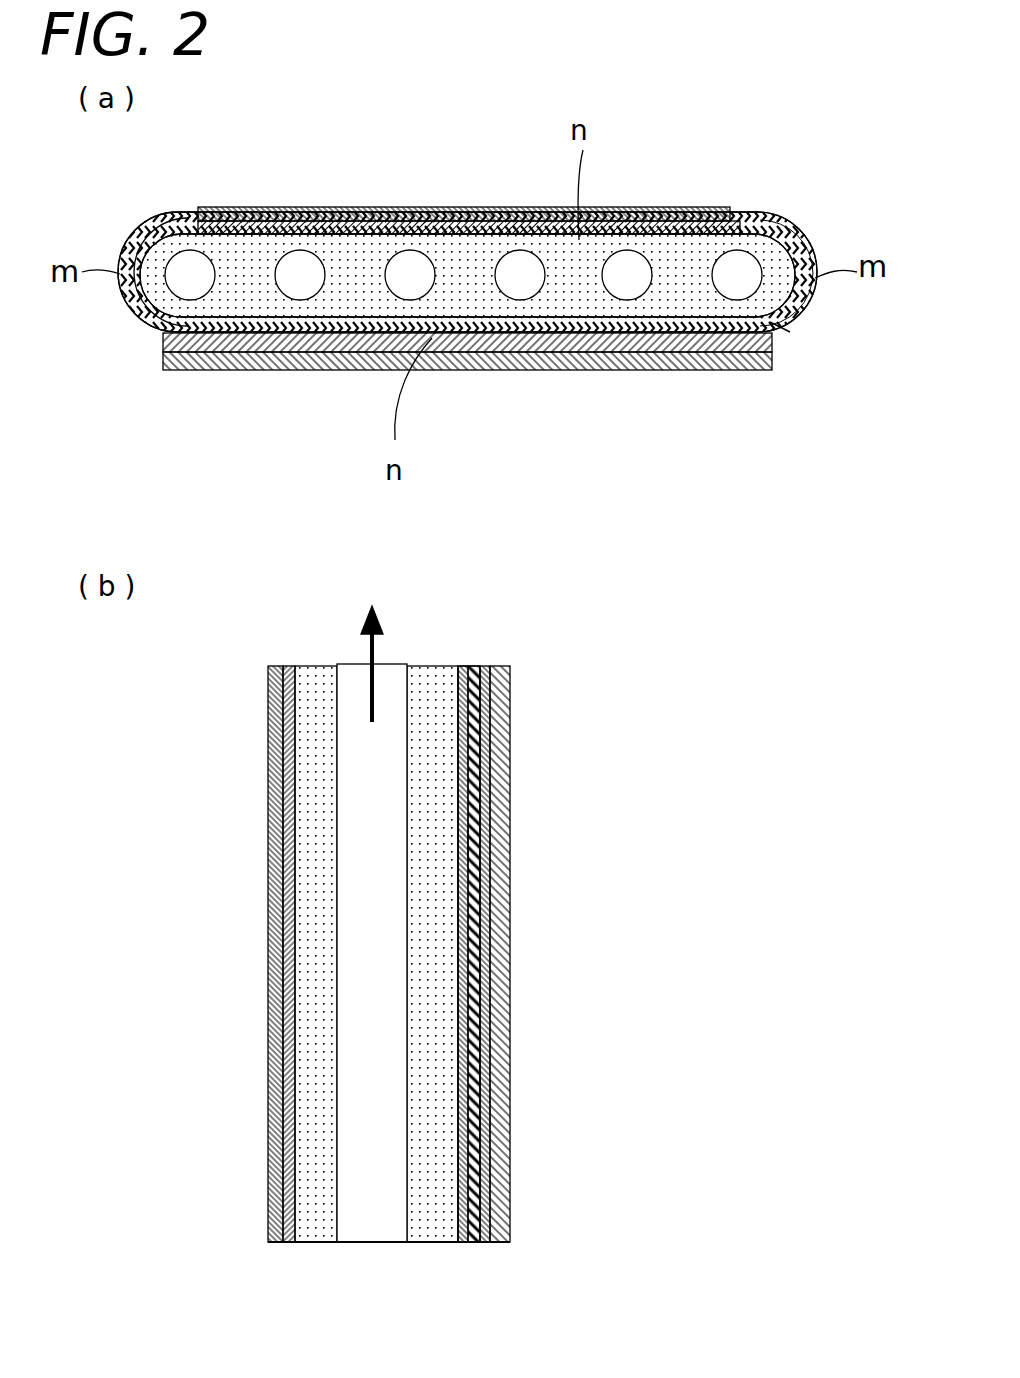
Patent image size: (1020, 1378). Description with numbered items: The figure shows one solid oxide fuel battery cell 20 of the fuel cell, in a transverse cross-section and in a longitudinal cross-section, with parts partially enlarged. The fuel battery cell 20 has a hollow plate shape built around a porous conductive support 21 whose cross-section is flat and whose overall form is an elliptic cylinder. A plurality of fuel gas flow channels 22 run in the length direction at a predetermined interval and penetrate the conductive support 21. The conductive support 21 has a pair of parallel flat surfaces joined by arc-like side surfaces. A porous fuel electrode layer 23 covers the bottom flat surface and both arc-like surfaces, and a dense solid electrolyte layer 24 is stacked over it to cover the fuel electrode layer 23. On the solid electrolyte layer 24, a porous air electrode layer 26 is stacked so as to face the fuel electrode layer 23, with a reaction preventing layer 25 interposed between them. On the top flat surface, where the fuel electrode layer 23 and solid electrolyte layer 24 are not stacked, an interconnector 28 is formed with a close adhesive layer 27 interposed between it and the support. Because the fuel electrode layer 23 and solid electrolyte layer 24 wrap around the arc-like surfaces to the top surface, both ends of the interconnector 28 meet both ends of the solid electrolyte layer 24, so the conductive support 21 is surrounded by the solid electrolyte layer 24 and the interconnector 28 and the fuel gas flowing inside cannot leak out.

The fuel battery cell 20 is at (768, 205).
The porous conductive support 21 is at (348, 296).
The fuel gas flow channels 22 is at (388, 270).
The fuel electrode layer 23 is at (778, 325).
The solid electrolyte layer 24 is at (655, 325).
The reaction preventing layer 25 is at (578, 338).
The air electrode layer 26 is at (628, 360).
The close adhesive layer 27 is at (678, 222).
The interconnector 28 is at (405, 214).